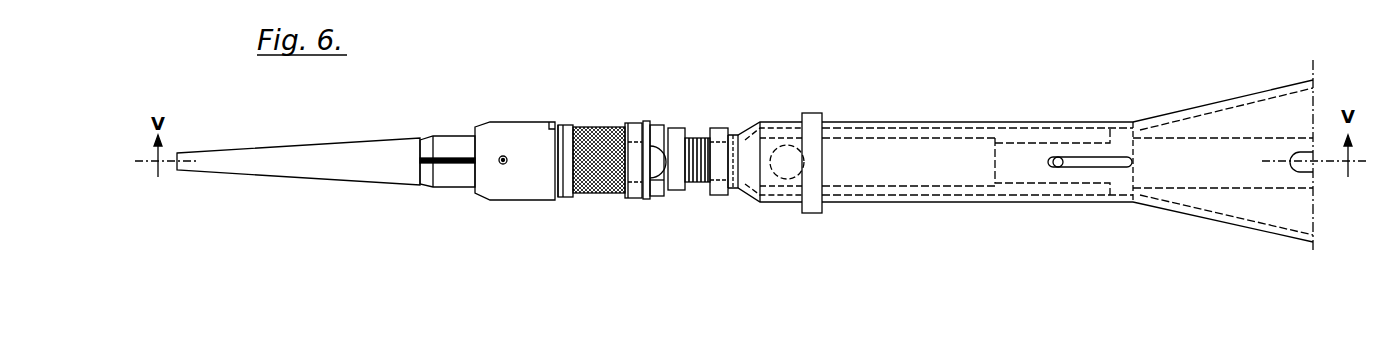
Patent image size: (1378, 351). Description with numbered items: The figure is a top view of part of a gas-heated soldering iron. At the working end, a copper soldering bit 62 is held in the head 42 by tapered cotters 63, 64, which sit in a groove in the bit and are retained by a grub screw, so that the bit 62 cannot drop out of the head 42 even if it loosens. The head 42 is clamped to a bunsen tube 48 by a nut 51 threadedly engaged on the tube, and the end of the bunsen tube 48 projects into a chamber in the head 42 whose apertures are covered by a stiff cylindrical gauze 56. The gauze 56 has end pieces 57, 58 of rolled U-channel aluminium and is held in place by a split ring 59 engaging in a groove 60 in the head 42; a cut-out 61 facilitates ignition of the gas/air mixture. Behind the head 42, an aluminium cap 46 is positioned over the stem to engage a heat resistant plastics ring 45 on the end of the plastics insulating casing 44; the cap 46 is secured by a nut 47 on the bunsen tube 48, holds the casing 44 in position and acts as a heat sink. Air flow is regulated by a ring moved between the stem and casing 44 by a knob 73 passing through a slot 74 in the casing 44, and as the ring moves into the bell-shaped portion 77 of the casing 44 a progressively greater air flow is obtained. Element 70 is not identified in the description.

The head 42 is at (552, 126).
The plastics insulating casing 44 is at (974, 122).
The heat resistant plastics ring 45 is at (812, 210).
The aluminium cap 46 is at (781, 122).
The nut 47 is at (721, 195).
The bunsen tube 48 is at (700, 140).
The nut 51 is at (680, 128).
The stiff cylindrical gauze 56 is at (602, 127).
The end piece 57 is at (564, 199).
The end piece 58 is at (628, 197).
The split ring 59 is at (648, 121).
The groove 60 is at (653, 197).
The cut-out 61 is at (660, 162).
The copper soldering bit 62 is at (293, 152).
The tapered cotter 63 is at (447, 136).
The tapered cotter 64 is at (449, 186).
The end hook 70 is at (1303, 170).
The knob 73 is at (1057, 166).
The slot 74 is at (1093, 166).
The bell-shaped portion 77 is at (1228, 112).